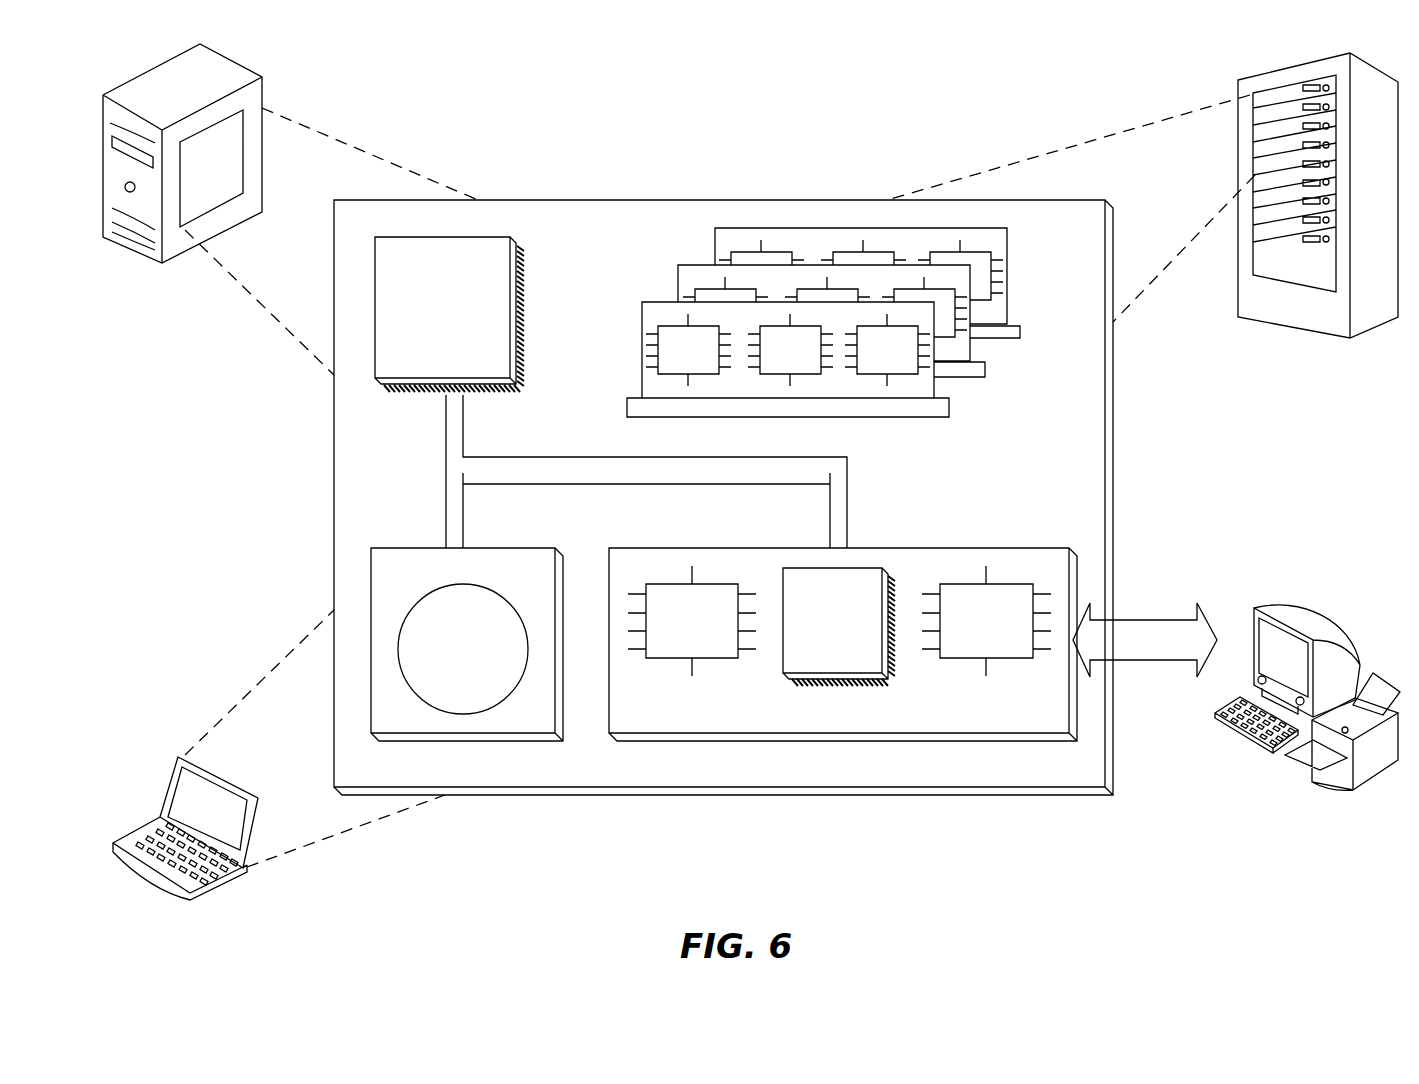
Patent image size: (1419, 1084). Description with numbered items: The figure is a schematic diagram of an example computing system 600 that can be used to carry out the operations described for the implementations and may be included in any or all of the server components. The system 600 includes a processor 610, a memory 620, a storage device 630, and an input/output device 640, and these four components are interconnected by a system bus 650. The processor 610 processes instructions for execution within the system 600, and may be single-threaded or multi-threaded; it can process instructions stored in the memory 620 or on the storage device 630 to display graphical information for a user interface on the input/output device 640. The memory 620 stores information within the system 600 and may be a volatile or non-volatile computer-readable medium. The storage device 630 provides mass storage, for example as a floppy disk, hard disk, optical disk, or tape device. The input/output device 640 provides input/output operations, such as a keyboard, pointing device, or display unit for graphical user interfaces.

The computing system 600 is at (540, 120).
The processor 610 is at (499, 370).
The memory 620 is at (1013, 375).
The storage device 630 is at (546, 720).
The input/output device 640 is at (1252, 612).
The system bus 650 is at (644, 475).